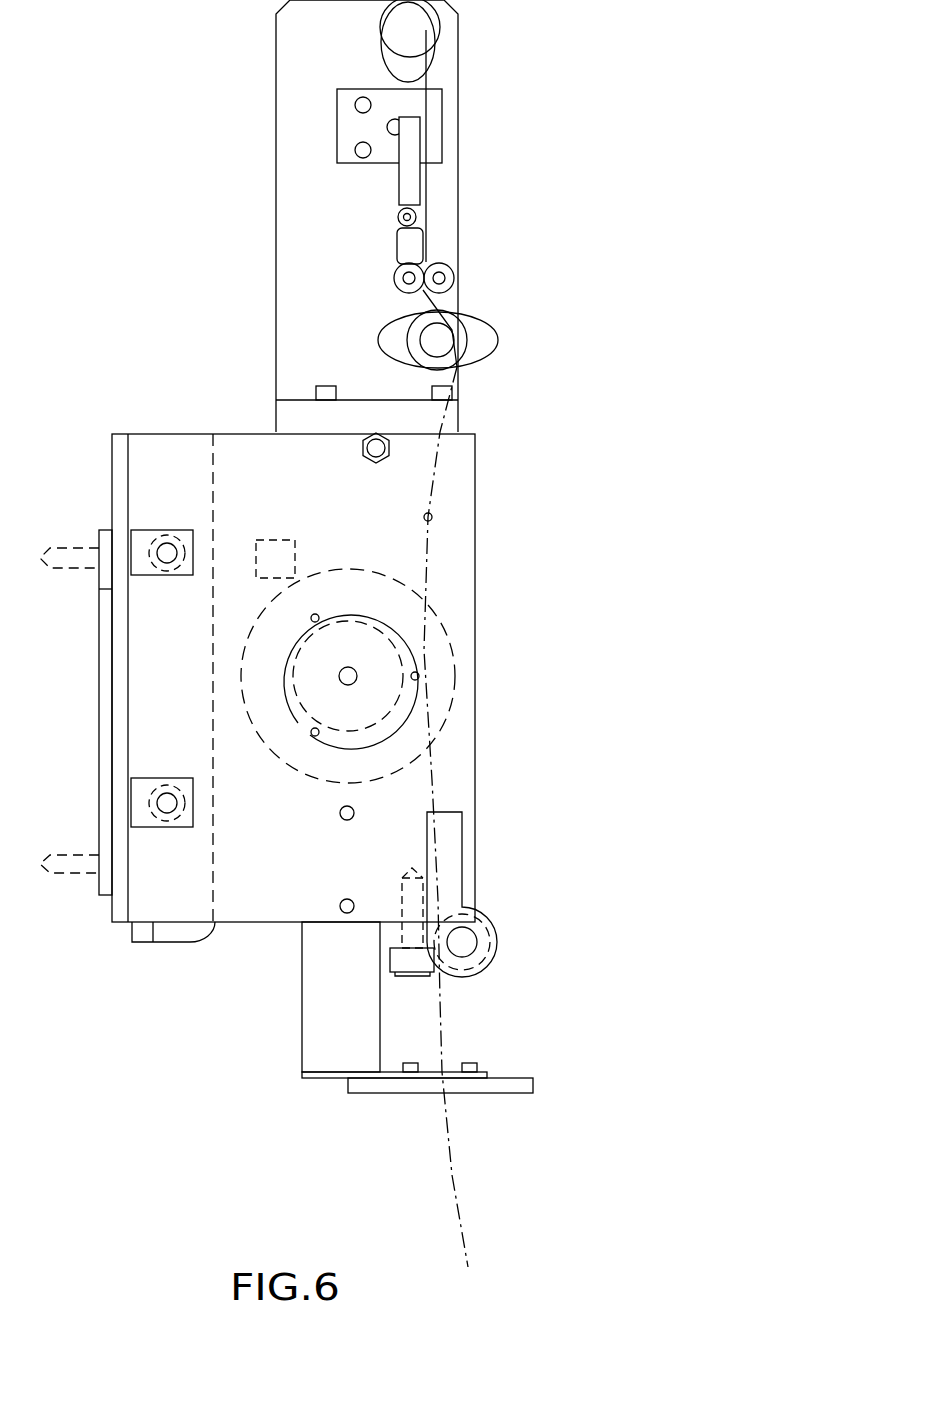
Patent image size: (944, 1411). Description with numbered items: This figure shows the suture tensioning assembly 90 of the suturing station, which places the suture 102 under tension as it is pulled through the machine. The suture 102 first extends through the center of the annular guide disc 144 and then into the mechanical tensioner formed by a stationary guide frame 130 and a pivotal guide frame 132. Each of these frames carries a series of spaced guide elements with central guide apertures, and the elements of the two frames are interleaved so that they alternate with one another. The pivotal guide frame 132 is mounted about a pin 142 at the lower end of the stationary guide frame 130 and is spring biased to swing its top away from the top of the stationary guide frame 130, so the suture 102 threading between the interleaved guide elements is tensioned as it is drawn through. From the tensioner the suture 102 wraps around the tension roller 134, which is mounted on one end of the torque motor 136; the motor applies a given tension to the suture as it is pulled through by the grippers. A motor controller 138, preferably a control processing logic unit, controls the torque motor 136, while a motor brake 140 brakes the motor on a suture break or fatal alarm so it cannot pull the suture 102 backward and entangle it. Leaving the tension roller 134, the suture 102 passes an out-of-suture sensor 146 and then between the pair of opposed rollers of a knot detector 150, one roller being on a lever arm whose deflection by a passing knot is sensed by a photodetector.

The tensioning assembly 90 is at (610, 438).
The suture 102 is at (452, 1175).
The stationary guide frame 130 is at (477, 862).
The pivotal guide frame 132 is at (458, 823).
The tension roller 134 is at (322, 709).
The torque motor 136 is at (450, 643).
The motor controller 138 is at (277, 540).
The motor brake 140 is at (345, 640).
The pin 142 is at (475, 944).
The annular guide disc 144 is at (502, 1095).
The out-of-suture sensor 146 is at (432, 518).
The knot detector 150 is at (468, 274).